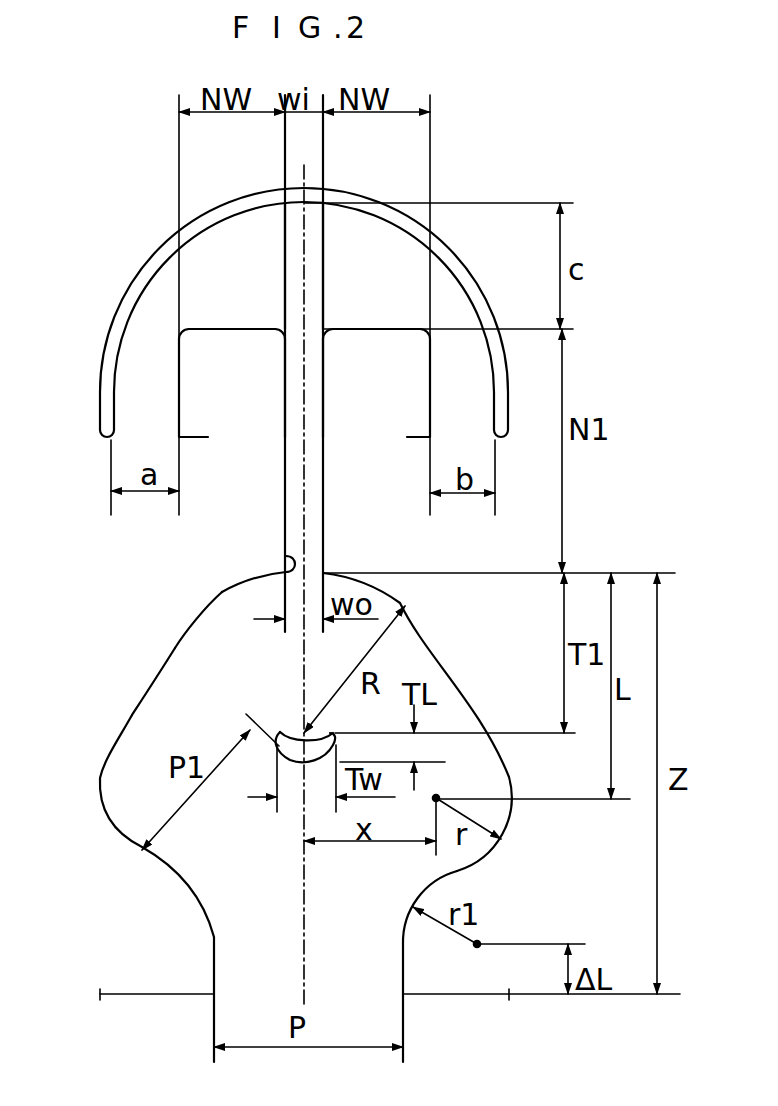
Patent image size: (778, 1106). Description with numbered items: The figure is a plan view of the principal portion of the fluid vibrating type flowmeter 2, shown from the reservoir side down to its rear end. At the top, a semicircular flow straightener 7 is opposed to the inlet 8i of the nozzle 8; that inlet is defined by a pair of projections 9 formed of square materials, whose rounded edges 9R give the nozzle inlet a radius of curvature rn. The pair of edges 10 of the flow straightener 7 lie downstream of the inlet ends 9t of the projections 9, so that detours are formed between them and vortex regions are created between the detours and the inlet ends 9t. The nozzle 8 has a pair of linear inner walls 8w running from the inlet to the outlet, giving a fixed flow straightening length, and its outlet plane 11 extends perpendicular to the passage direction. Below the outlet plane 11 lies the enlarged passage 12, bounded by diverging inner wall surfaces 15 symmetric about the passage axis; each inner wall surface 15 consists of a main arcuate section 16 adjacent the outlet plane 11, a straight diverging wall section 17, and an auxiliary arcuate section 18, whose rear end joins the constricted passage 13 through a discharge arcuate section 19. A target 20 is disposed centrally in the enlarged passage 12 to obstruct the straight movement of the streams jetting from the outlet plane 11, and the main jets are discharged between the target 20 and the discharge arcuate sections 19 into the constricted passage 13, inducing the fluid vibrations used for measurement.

The fluid vibrating type flowmeter 2 is at (124, 210).
The flow straightener 7 is at (121, 302).
The nozzle 8 is at (314, 507).
The inlet of the nozzle 8i is at (312, 330).
The linear inner walls 8w is at (285, 455).
The projections 9 is at (192, 378).
The inlet ends of the projections 9t is at (190, 326).
The rounded edges 9R is at (326, 338).
The radius of curvature rn is at (283, 336).
The edges of the flow straightener 10 is at (106, 432).
The outlet plane of the nozzle 11 is at (285, 562).
The enlarged passage 12 is at (138, 808).
The constricted passage 13 is at (245, 971).
The inner wall surfaces 15 is at (133, 685).
The main arcuate section 16 is at (212, 606).
The straight diverging wall section 17 is at (168, 650).
The auxiliary arcuate section 18 is at (112, 731).
The discharge arcuate section 19 is at (197, 902).
The target 20 is at (284, 731).